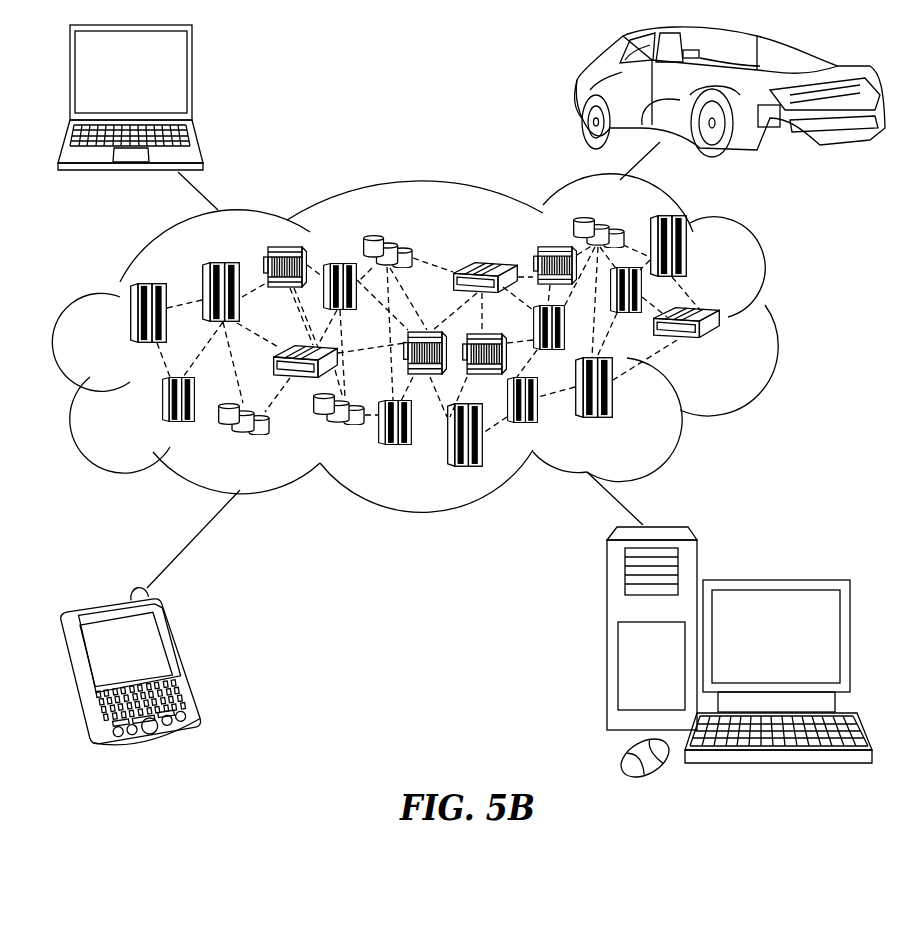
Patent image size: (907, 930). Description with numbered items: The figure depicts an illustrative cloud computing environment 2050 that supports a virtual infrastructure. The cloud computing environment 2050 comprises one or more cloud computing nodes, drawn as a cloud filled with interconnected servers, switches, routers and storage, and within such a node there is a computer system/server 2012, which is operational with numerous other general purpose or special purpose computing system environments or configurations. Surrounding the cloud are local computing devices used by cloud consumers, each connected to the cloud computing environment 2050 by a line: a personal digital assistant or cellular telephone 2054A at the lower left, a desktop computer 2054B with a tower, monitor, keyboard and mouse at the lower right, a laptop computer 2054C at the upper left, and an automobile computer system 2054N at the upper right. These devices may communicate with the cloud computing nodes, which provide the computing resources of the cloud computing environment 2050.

The laptop computer 2054C is at (192, 80).
The automobile computer system 2054N is at (578, 92).
The personal digital assistant (PDA) or cellular telephone 2054A is at (183, 662).
The desktop computer 2054B is at (773, 578).
The cloud computing environment 2050 is at (775, 322).
The computer system/server 2012 is at (735, 354).